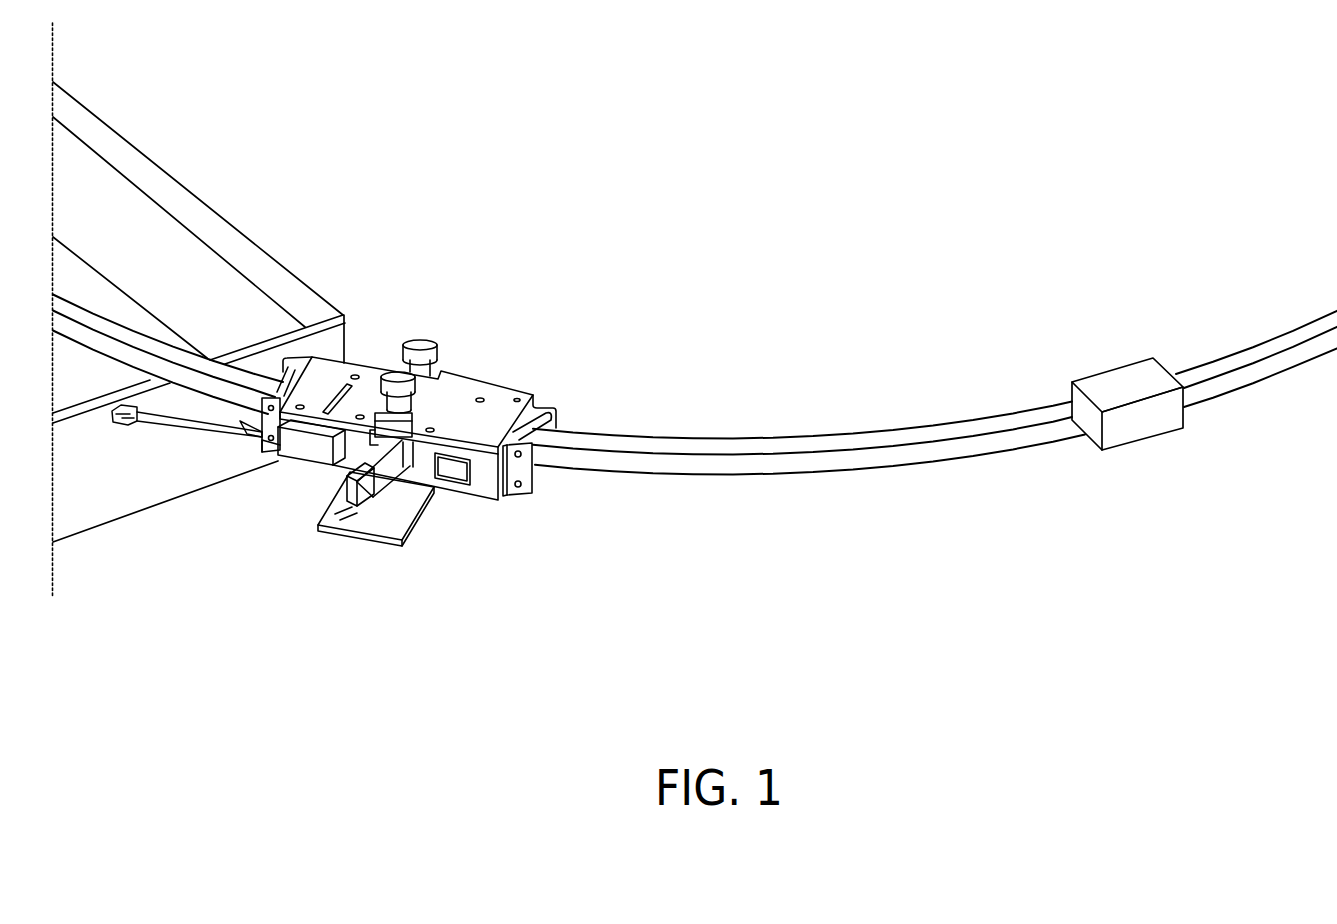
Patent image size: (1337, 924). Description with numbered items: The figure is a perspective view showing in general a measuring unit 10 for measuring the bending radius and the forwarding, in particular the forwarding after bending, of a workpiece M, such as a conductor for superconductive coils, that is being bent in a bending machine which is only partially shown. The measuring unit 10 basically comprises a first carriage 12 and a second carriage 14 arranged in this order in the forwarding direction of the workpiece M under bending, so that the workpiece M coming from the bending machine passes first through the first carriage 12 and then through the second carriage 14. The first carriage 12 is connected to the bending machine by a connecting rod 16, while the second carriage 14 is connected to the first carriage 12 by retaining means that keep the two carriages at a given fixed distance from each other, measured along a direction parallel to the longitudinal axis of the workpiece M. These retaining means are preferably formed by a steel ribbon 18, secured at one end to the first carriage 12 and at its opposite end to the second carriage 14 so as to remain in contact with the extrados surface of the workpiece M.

The measuring unit 10 is at (452, 463).
The first carriage 12 is at (476, 378).
The second carriage 14 is at (1158, 440).
The connecting rod 16 is at (160, 428).
The steel ribbon 18 is at (902, 452).
The workpiece M is at (770, 447).